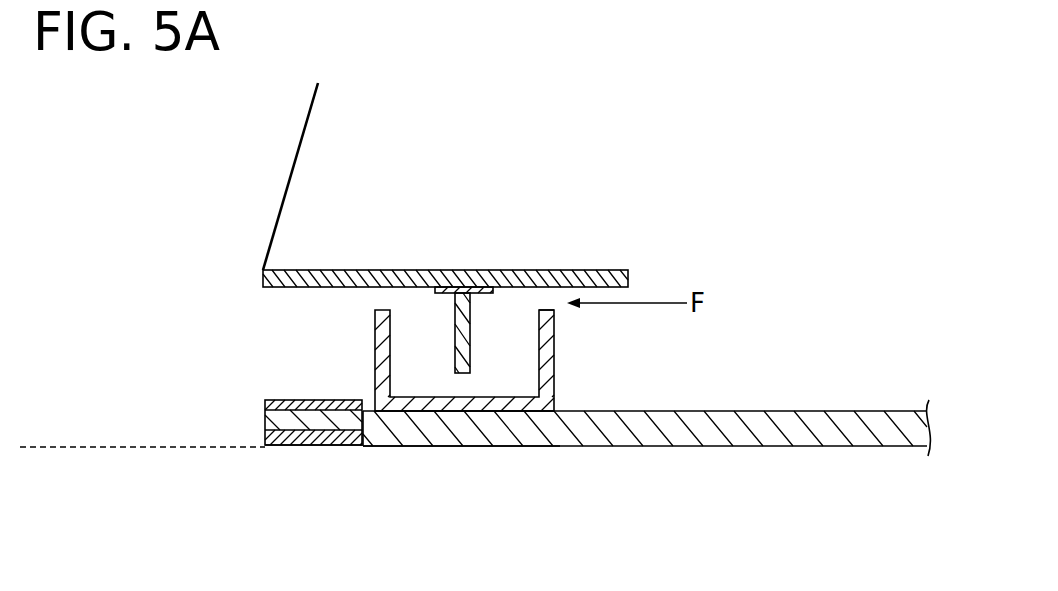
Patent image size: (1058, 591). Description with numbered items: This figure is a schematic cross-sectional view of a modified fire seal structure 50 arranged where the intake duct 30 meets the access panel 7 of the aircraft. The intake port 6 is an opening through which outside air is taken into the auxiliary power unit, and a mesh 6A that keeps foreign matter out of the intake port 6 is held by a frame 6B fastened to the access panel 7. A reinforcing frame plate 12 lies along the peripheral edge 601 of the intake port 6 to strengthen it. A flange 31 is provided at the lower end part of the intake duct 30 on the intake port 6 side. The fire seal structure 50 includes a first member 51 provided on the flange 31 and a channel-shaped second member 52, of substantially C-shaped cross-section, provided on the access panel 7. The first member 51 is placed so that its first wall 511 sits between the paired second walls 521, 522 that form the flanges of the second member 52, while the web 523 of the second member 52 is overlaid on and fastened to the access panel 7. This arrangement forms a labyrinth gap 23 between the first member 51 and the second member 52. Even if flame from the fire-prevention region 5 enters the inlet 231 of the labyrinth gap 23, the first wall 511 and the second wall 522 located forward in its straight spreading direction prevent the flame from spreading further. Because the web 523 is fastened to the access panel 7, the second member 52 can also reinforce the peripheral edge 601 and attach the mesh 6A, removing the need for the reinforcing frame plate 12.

The intake duct 30 is at (332, 113).
The fire-prevention region 5 is at (812, 174).
The flange 31 is at (577, 270).
The first member 51 is at (455, 325).
The first wall 511 is at (470, 342).
The inlet 231 is at (545, 298).
The second member 52 is at (374, 331).
The second wall 521 is at (553, 368).
The second wall 522 is at (391, 357).
The web 523 is at (512, 379).
The fire seal structure 50 is at (578, 397).
The access panel 7 is at (828, 447).
The labyrinth gap 23 is at (547, 447).
The intake port 6 is at (153, 460).
The reinforcing frame plate 12 is at (277, 400).
The frame 6B is at (345, 450).
The mesh 6A is at (78, 450).
The peripheral edge 601 is at (275, 450).